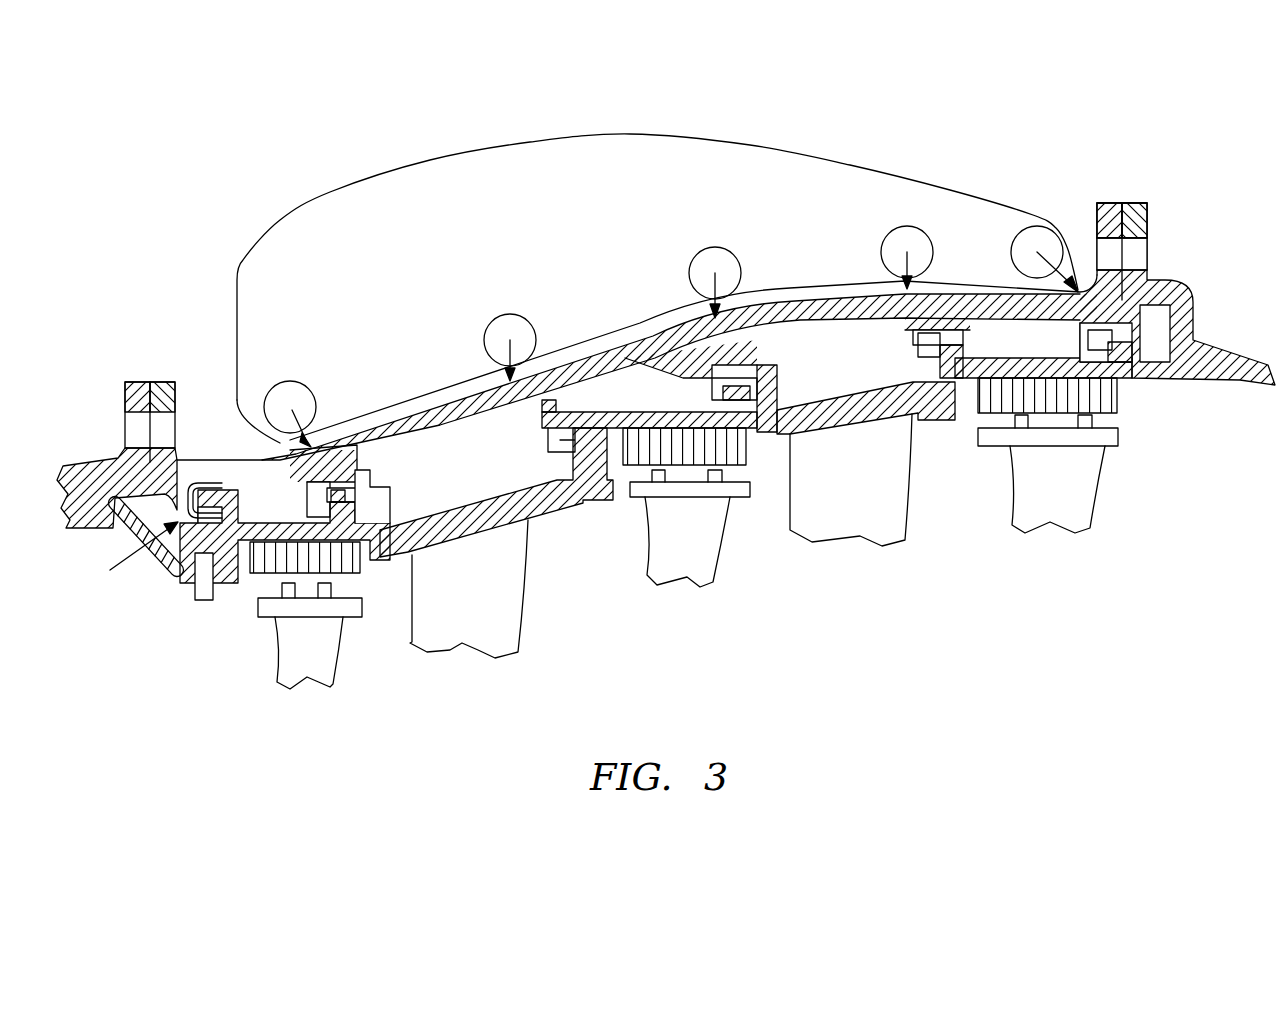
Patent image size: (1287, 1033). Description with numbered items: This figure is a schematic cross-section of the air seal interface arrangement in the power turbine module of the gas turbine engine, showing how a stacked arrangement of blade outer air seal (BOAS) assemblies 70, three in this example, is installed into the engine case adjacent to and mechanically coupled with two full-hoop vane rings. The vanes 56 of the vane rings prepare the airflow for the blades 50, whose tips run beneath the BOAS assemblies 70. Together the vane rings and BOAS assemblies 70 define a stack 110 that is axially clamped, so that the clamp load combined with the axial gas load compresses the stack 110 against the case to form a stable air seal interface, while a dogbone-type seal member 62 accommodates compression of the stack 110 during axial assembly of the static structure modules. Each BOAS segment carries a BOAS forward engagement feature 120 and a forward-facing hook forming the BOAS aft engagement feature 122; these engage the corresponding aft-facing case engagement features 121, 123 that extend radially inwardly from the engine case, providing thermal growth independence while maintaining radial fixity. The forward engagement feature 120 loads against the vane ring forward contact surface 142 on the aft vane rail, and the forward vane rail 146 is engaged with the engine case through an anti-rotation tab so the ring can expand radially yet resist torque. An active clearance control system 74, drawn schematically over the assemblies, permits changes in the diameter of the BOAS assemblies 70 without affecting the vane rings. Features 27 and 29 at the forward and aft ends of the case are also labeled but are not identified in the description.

The forward flange 27 is at (126, 400).
The aft flange 29 is at (1240, 375).
The blade 50 is at (325, 663).
The vane 56 is at (493, 598).
The seal member 62 is at (160, 573).
The blade outer air seal (BOAS) assembly 70 is at (272, 525).
The active clearance control system 74 is at (590, 212).
The stack 110 is at (1066, 580).
The BOAS forward engagement feature 120 is at (570, 398).
The case engagement feature 121 is at (198, 513).
The BOAS aft engagement feature 122 is at (340, 480).
The case engagement feature 123 is at (338, 493).
The vane ring forward contact surface 142 is at (560, 505).
The forward vane rail 146 is at (390, 552).